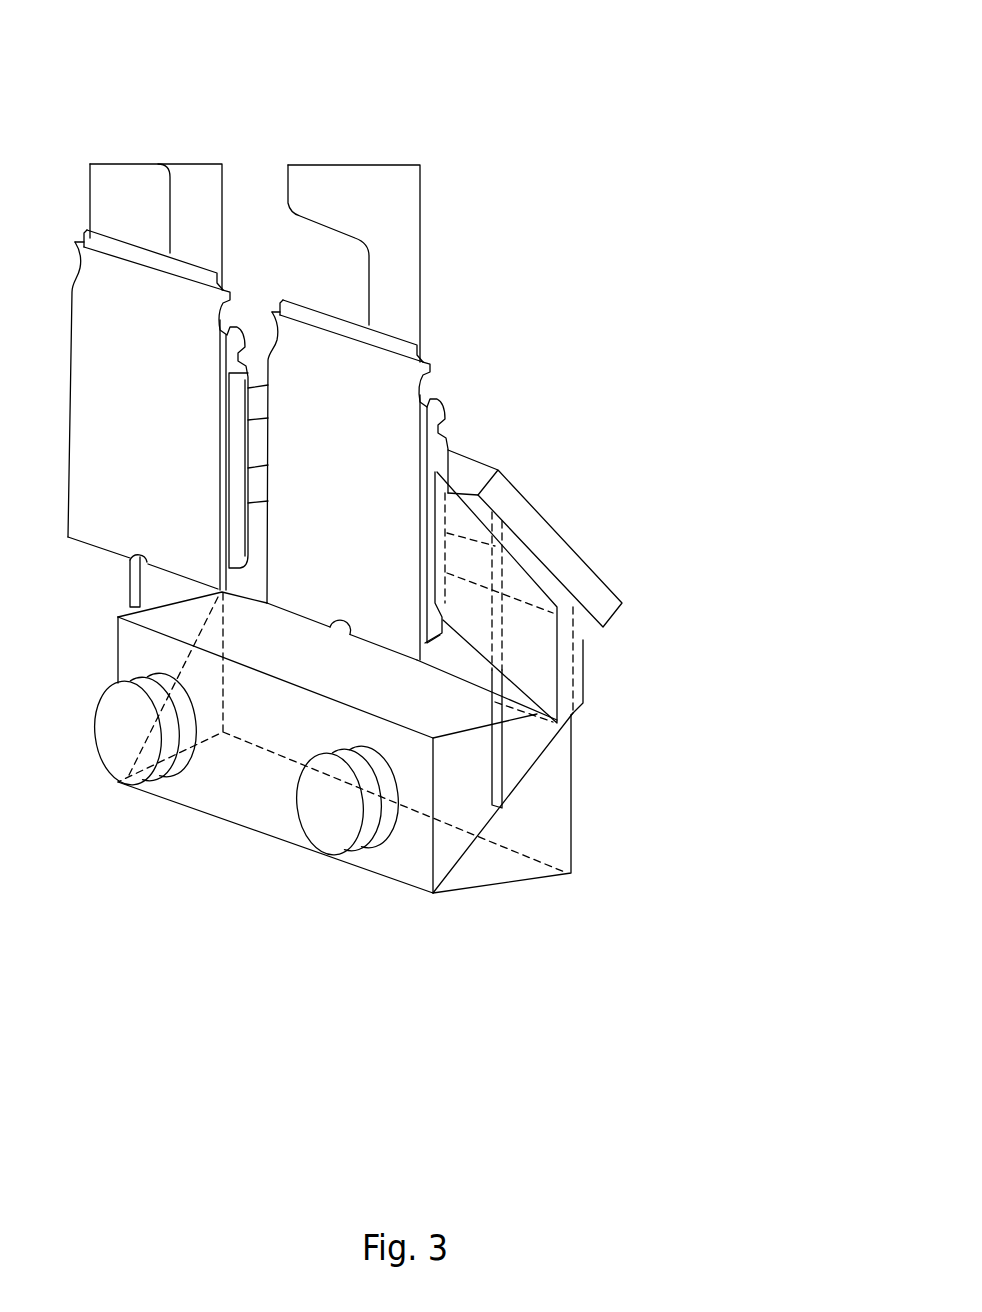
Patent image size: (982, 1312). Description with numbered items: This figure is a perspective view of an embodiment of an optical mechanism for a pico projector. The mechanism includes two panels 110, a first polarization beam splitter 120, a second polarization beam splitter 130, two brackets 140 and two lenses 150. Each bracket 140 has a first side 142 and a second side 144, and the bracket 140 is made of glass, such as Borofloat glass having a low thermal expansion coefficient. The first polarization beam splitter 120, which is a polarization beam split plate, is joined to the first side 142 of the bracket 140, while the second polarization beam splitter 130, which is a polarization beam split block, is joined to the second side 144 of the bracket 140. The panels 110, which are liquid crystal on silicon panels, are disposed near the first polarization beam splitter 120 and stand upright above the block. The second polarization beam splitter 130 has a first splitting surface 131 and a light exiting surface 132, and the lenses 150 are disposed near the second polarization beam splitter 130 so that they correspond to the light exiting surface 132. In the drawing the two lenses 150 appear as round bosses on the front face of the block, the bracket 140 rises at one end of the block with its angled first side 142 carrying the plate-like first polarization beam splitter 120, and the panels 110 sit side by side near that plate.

The panel 110 is at (352, 405).
The first polarization beam splitter 120 is at (616, 569).
The second polarization beam splitter 130 is at (409, 825).
The first splitting surface 131 is at (450, 870).
The light exiting surface 132 is at (407, 862).
The bracket 140 is at (562, 660).
The first side 142 is at (550, 566).
The second side 144 is at (530, 772).
The lens 150 is at (337, 802).